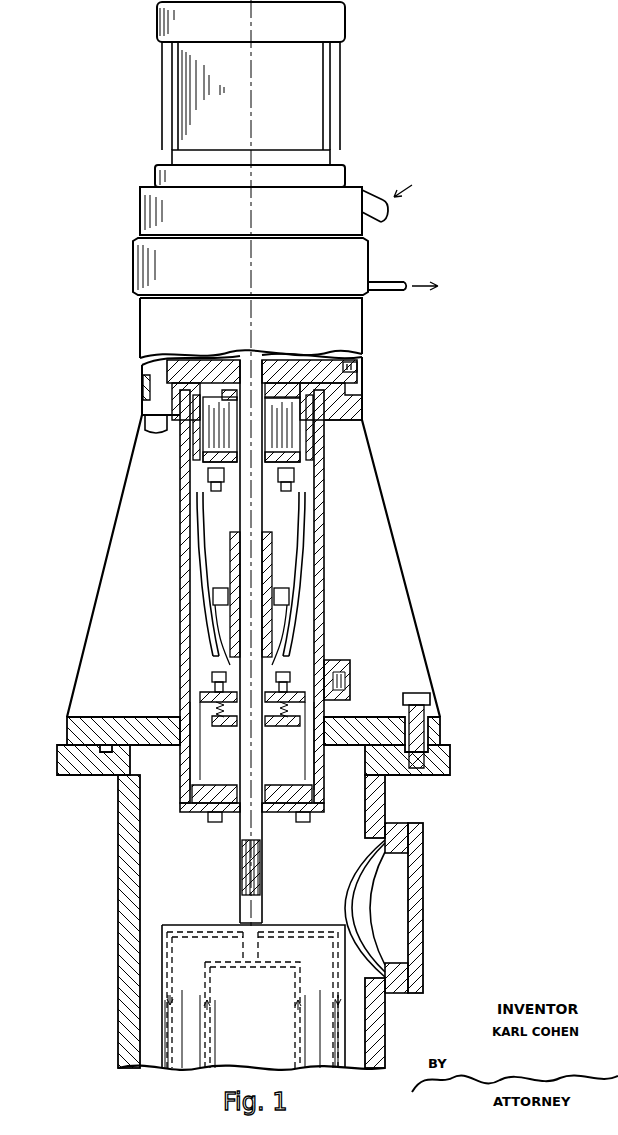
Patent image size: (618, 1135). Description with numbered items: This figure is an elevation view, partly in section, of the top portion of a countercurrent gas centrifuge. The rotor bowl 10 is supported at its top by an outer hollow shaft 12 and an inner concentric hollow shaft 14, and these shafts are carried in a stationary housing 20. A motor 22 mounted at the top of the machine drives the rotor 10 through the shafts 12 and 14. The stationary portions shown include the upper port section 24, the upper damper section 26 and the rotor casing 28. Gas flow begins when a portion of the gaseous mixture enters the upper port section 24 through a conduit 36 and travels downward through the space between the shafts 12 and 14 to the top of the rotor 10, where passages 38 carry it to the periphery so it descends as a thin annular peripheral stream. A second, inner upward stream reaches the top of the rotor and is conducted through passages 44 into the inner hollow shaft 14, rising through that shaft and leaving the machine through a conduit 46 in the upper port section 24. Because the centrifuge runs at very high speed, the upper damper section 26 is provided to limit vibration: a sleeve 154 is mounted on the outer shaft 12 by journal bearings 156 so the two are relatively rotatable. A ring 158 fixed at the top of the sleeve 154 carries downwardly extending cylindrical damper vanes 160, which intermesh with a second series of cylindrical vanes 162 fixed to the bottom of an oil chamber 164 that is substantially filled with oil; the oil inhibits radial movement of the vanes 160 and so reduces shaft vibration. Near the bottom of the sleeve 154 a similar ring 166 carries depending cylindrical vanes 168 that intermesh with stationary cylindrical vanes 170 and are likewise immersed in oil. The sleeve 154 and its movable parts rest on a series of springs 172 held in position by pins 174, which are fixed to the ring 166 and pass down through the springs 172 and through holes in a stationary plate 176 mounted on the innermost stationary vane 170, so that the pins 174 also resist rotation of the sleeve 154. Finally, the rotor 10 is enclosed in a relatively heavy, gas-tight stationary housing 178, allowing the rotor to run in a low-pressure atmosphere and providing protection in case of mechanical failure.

The rotor bowl 10 is at (337, 1040).
The outer hollow shaft 12 is at (262, 853).
The inner concentric hollow shaft 14 is at (262, 886).
The stationary housing 20 is at (108, 648).
The motor 22 is at (305, 82).
The upper port section 24 is at (563, 380).
The upper damper section 26 is at (563, 385).
The rotor casing 28 is at (563, 782).
The conduit 36 is at (378, 207).
The passages 38 is at (285, 930).
The passages 44 is at (277, 966).
The conduit 46 is at (390, 292).
The sleeve 154 is at (272, 478).
The journal bearings 156 is at (270, 632).
The ring 158 is at (340, 424).
The cylindrical damper vanes 160 is at (338, 427).
The cylindrical vanes 162 is at (200, 438).
The oil chamber 164 is at (195, 450).
The ring 166 is at (305, 705).
The depending cylindrical vanes 168 is at (320, 747).
The stationary cylindrical vanes 170 is at (320, 758).
The springs 172 is at (300, 705).
The pins 174 is at (205, 712).
The stationary plate 176 is at (232, 728).
The stationary housing 178 is at (128, 975).